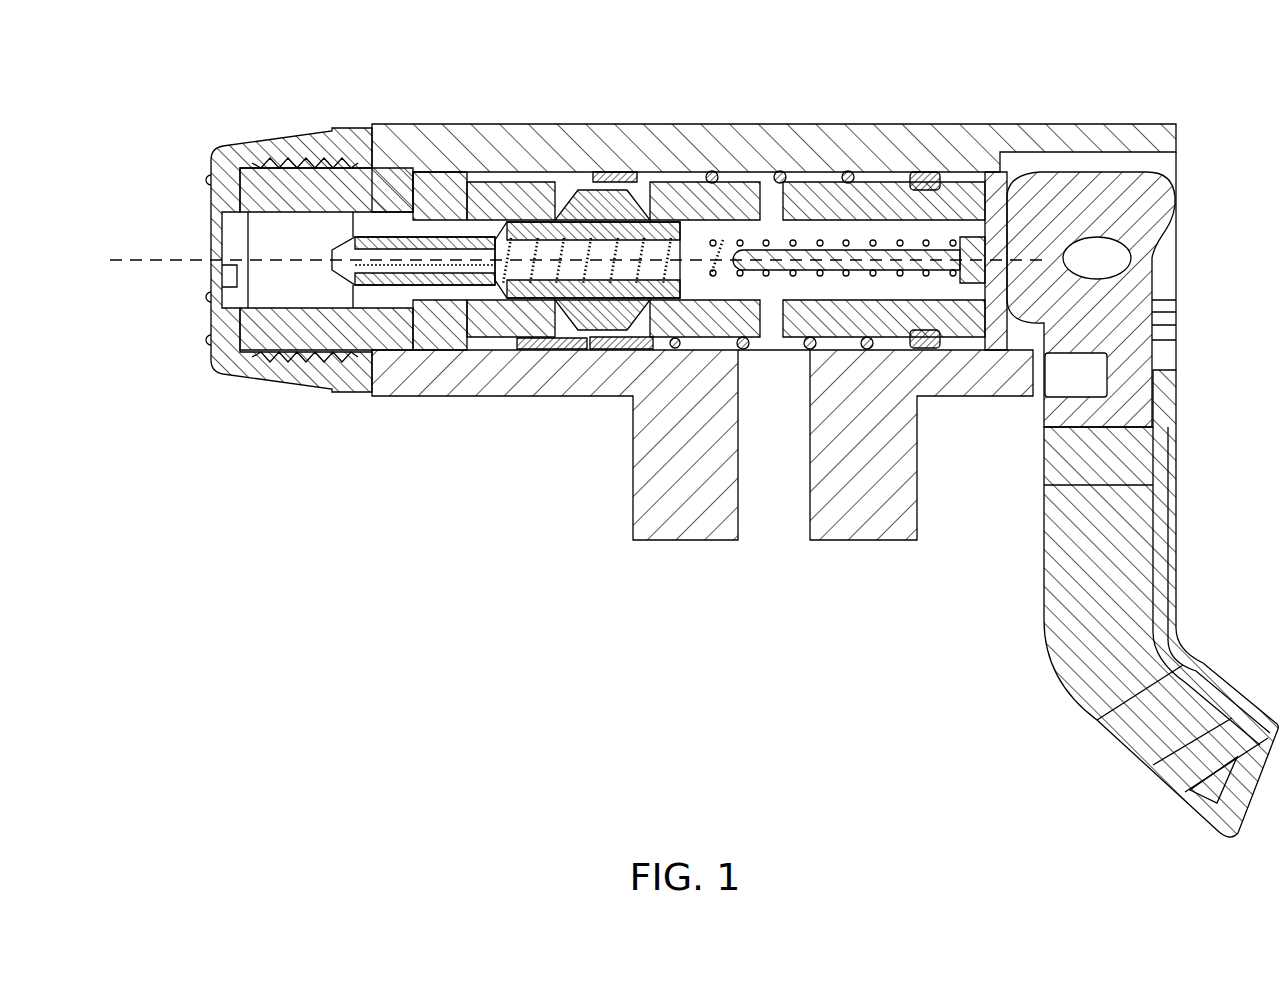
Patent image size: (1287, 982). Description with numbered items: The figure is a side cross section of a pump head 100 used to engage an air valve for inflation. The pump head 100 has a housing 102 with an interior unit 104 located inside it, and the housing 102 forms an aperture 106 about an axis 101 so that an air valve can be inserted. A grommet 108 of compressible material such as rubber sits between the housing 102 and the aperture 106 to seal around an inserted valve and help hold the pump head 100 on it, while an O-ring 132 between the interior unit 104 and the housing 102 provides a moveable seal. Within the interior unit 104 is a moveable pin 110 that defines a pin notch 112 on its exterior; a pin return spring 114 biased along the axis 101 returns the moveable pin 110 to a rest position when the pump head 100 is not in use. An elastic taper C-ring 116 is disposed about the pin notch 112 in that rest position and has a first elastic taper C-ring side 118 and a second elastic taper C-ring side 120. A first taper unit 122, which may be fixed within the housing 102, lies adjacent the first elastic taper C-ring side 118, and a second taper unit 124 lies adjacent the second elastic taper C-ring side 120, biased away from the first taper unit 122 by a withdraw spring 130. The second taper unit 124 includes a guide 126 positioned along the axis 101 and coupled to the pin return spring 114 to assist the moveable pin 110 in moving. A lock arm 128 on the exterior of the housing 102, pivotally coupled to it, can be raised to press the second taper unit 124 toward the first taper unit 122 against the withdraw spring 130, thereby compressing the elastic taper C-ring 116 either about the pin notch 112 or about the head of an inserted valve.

The pump head 100 is at (1185, 60).
The axis 101 is at (300, 260).
The housing 102 is at (1158, 142).
The interior unit 104 is at (490, 376).
The aperture 106 is at (212, 196).
The grommet 108 is at (262, 176).
The moveable pin 110 is at (430, 245).
The pin notch 112 is at (553, 195).
The pin return spring 114 is at (690, 262).
The elastic taper C-ring 116 is at (615, 192).
The first elastic taper C-ring side 118 is at (567, 349).
The second elastic taper C-ring side 120 is at (635, 350).
The first taper unit 122 is at (488, 198).
The second taper unit 124 is at (965, 230).
The guide 126 is at (925, 255).
The lock arm 128 is at (1168, 357).
The withdraw spring 130 is at (848, 172).
The O-ring 132 is at (923, 176).